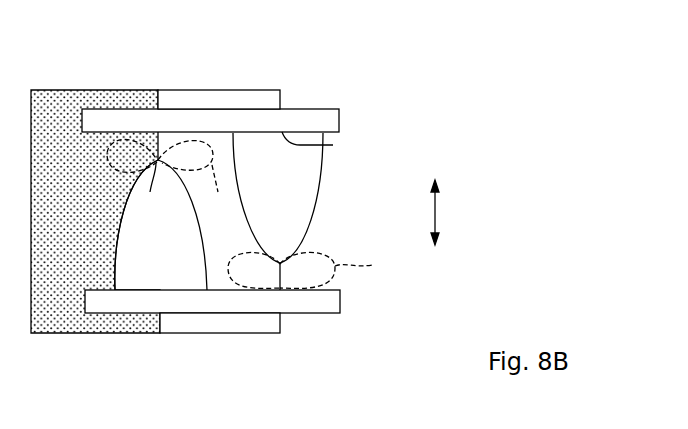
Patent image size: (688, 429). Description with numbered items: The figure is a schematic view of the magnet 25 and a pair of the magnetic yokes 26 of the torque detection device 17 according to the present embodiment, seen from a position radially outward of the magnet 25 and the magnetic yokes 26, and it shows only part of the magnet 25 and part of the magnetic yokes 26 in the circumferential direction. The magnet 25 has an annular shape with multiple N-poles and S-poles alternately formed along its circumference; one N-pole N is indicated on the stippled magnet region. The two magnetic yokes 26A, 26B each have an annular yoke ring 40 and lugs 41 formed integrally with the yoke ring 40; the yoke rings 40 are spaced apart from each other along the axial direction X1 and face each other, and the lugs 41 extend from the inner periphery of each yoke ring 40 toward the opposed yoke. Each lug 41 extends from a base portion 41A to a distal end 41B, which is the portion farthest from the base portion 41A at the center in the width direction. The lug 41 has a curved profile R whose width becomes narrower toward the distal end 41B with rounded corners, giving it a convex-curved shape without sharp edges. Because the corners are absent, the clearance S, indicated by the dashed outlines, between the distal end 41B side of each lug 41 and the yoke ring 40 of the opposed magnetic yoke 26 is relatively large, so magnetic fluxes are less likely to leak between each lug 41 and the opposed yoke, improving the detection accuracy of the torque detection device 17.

The torque detection device 17 is at (254, 213).
The magnet 25 is at (184, 100).
The magnetic yokes 26 is at (246, 213).
The magnetic yoke 26A is at (330, 109).
The magnetic yoke 26B is at (327, 314).
The yoke ring 40 is at (257, 120).
The lug 41 is at (250, 211).
The base portion 41A is at (333, 145).
The distal end 41B is at (347, 185).
The N-pole N is at (95, 197).
The clearance S is at (248, 175).
The curved profile R is at (311, 221).
The axial direction X1 is at (437, 210).